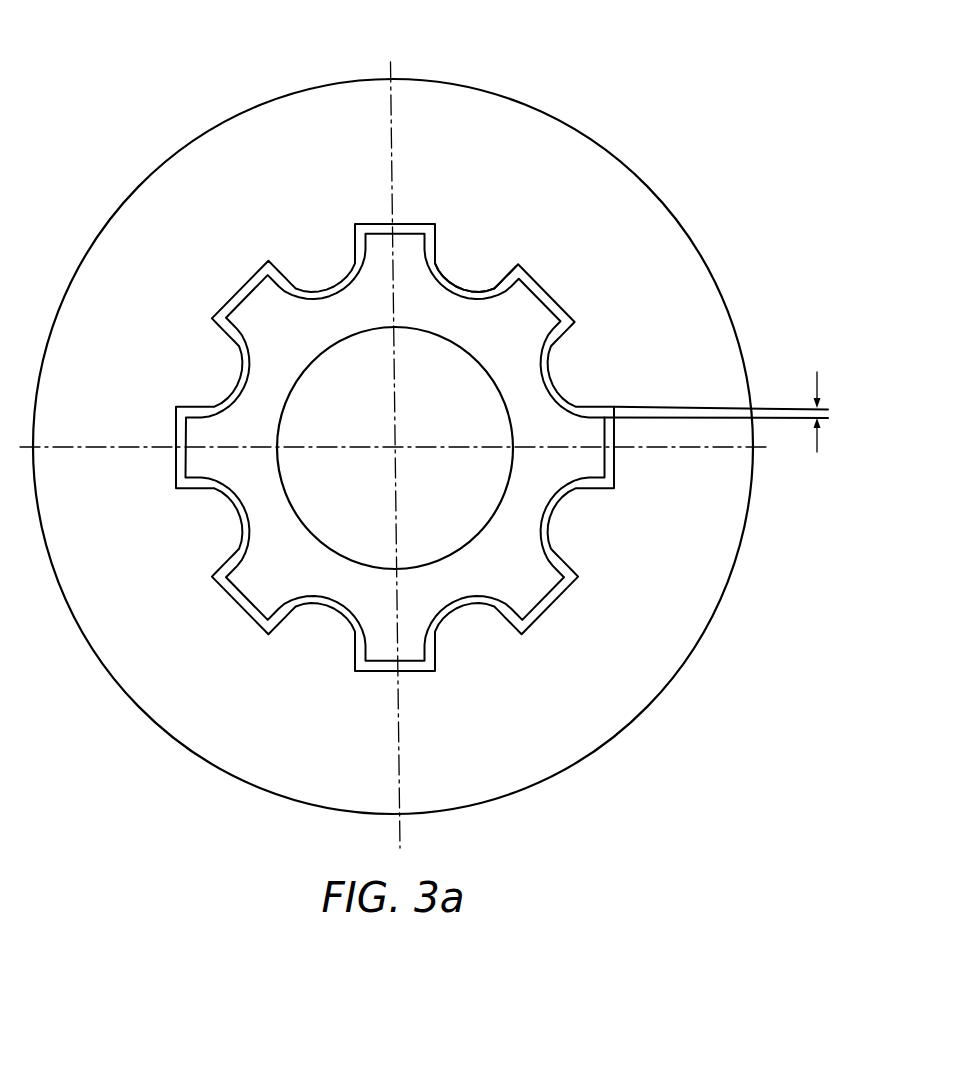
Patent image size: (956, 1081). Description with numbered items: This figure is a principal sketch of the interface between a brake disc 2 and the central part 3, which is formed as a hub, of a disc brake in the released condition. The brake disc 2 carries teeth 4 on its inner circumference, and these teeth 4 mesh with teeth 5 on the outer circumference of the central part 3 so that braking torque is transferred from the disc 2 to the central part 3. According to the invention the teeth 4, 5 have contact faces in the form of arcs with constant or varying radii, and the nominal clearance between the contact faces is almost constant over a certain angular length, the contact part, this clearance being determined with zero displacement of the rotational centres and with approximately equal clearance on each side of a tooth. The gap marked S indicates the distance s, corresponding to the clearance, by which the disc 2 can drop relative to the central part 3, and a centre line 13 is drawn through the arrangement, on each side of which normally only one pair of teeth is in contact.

The brake disc 2 is at (485, 105).
The central part 3 is at (342, 328).
The teeth 4 is at (468, 262).
The teeth 5 is at (537, 310).
The centre line 13 is at (392, 98).
The distance s S is at (817, 393).